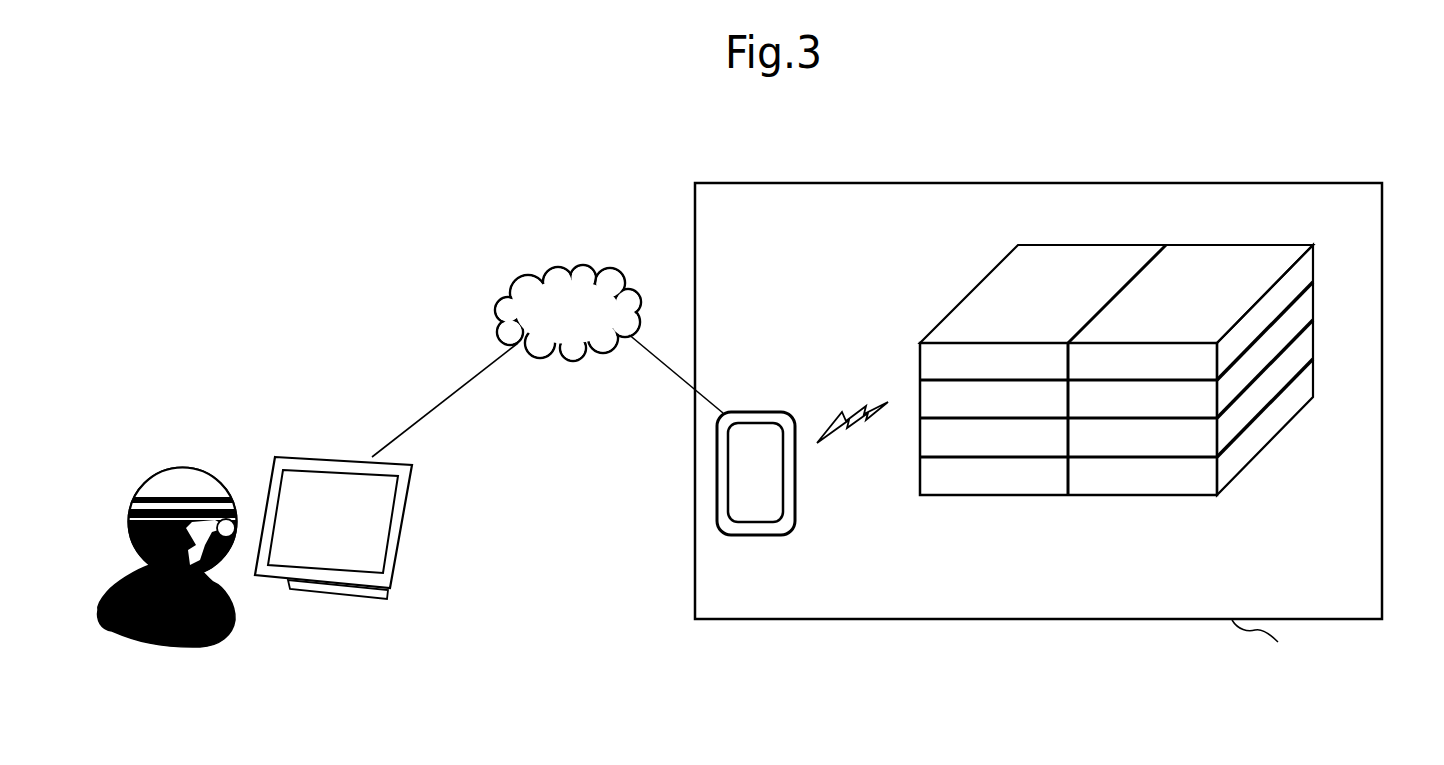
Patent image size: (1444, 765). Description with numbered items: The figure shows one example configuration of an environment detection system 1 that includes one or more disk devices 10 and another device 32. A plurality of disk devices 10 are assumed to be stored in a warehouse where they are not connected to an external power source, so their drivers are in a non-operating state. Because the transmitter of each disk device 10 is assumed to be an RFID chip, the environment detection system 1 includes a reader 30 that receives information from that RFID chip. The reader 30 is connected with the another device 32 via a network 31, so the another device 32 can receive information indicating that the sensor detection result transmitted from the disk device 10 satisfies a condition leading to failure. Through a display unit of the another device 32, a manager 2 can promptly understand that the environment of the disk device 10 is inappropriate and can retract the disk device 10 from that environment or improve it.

The environment detection system 1 is at (946, 99).
The manager 2 is at (210, 645).
The disk device 10 is at (1155, 497).
The reader 30 is at (760, 537).
The network 31 is at (512, 283).
The another device 32 is at (340, 592).